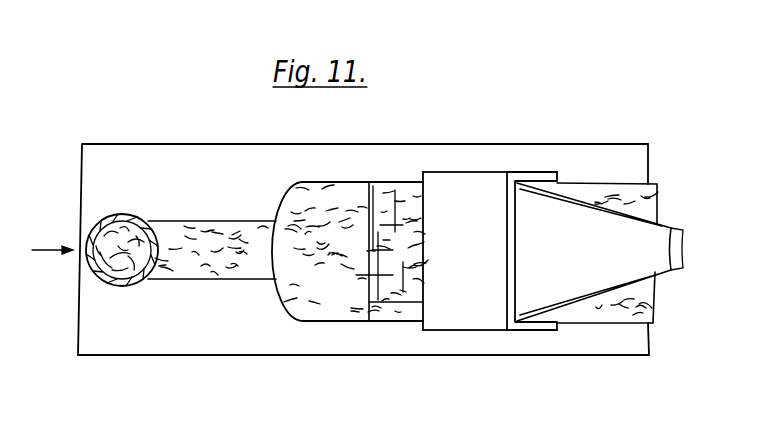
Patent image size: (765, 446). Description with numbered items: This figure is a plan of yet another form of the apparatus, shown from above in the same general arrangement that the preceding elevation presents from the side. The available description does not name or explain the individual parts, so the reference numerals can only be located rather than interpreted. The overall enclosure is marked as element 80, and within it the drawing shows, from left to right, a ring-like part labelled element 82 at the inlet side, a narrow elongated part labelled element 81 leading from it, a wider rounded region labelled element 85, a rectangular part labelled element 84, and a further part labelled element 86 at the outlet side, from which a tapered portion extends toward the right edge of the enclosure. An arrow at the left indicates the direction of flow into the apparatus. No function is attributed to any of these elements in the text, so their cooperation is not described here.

The housing 80 is at (190, 144).
The tubular member 81 is at (233, 221).
The inlet ring 82 is at (117, 215).
The block 84 is at (446, 172).
The chamber 85 is at (358, 182).
The nozzle holder 86 is at (599, 186).